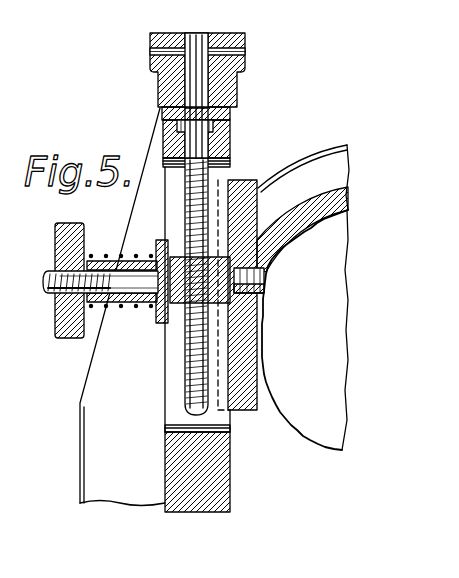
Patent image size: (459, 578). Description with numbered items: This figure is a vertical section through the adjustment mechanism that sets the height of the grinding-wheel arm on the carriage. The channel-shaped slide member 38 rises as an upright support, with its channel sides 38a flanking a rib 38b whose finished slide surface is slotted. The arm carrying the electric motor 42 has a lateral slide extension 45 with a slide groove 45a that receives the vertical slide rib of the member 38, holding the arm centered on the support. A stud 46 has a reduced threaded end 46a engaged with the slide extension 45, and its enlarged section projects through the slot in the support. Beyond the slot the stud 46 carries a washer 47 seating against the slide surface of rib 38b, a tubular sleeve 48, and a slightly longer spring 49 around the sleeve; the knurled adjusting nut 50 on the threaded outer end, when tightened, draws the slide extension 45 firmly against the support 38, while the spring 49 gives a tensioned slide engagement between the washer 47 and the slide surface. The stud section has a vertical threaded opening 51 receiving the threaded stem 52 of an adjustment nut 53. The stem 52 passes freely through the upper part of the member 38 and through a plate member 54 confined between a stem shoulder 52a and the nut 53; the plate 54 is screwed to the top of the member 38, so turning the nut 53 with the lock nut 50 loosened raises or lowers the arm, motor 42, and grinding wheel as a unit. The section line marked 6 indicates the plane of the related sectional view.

The channel-shaped slide member 38 is at (180, 483).
The channel sides 38a is at (88, 473).
The rib 38b is at (165, 412).
The electric motor 42 is at (318, 425).
The lateral slide extension 45 is at (243, 181).
The slide groove 45a is at (231, 179).
The stud 46 is at (124, 278).
The reduced threaded end 46a is at (264, 288).
The washer 47 is at (160, 325).
The tubular sleeve 48 is at (123, 307).
The spring 49 is at (108, 256).
The knurled adjusting nut 50 is at (62, 330).
The vertical threaded opening 51 is at (203, 312).
The threaded stem 52 is at (206, 375).
The stem shoulder 52a is at (232, 118).
The adjustment nut 53 is at (227, 30).
The plate member 54 is at (164, 109).
The section line 6- 6 is at (36, 285).